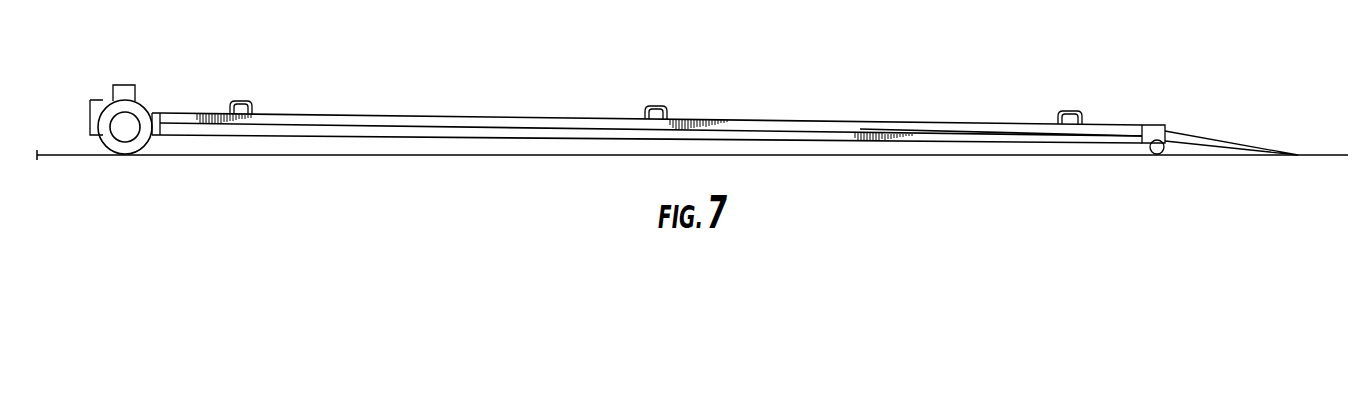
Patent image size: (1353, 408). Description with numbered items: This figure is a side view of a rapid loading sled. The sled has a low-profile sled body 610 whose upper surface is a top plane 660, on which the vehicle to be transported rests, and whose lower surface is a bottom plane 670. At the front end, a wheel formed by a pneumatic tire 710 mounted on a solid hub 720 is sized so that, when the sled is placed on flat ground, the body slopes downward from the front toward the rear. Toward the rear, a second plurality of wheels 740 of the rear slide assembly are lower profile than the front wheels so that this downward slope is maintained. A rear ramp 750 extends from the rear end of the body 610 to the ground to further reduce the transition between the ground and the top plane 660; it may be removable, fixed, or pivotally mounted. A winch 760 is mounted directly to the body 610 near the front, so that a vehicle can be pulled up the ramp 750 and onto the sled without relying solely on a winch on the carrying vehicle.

The sled body 610 is at (467, 108).
The top plane 660 is at (917, 114).
The bottom plane 670 is at (884, 143).
The pneumatic tire 710 is at (142, 142).
The solid hub 720 is at (127, 127).
The second plurality of wheels 740 is at (1158, 154).
The rear ramp 750 is at (1217, 140).
The winch 760 is at (113, 86).